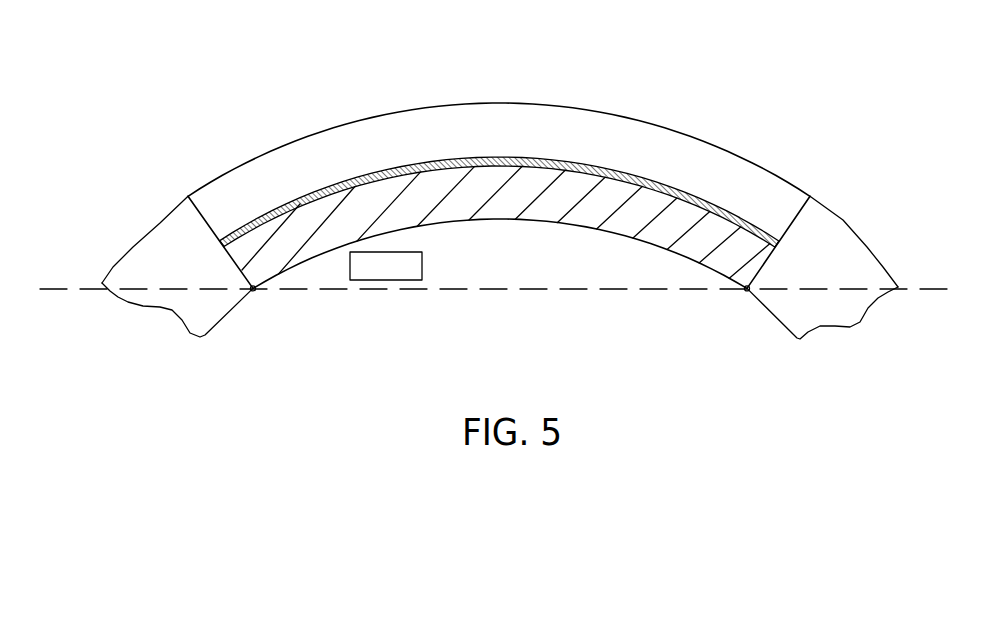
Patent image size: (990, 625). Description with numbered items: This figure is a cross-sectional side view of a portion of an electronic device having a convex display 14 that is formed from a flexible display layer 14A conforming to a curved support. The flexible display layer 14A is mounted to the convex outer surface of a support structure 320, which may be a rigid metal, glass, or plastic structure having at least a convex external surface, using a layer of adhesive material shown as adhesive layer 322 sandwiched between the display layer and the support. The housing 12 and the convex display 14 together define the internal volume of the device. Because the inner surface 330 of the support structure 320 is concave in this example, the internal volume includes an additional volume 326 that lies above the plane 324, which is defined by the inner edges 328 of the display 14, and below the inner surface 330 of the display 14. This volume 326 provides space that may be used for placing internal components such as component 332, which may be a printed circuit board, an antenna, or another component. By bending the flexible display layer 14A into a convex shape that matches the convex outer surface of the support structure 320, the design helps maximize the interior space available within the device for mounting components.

The housing 12 is at (160, 237).
The convex display 14 is at (802, 126).
The flexible display layer 14A is at (587, 127).
The support structure 320 is at (676, 222).
The adhesive layer 322 is at (632, 176).
The plane 324 is at (495, 291).
The volume 326 is at (518, 263).
The inner edges 328 is at (254, 292).
The inner surface 330 is at (612, 235).
The component 332 is at (382, 272).